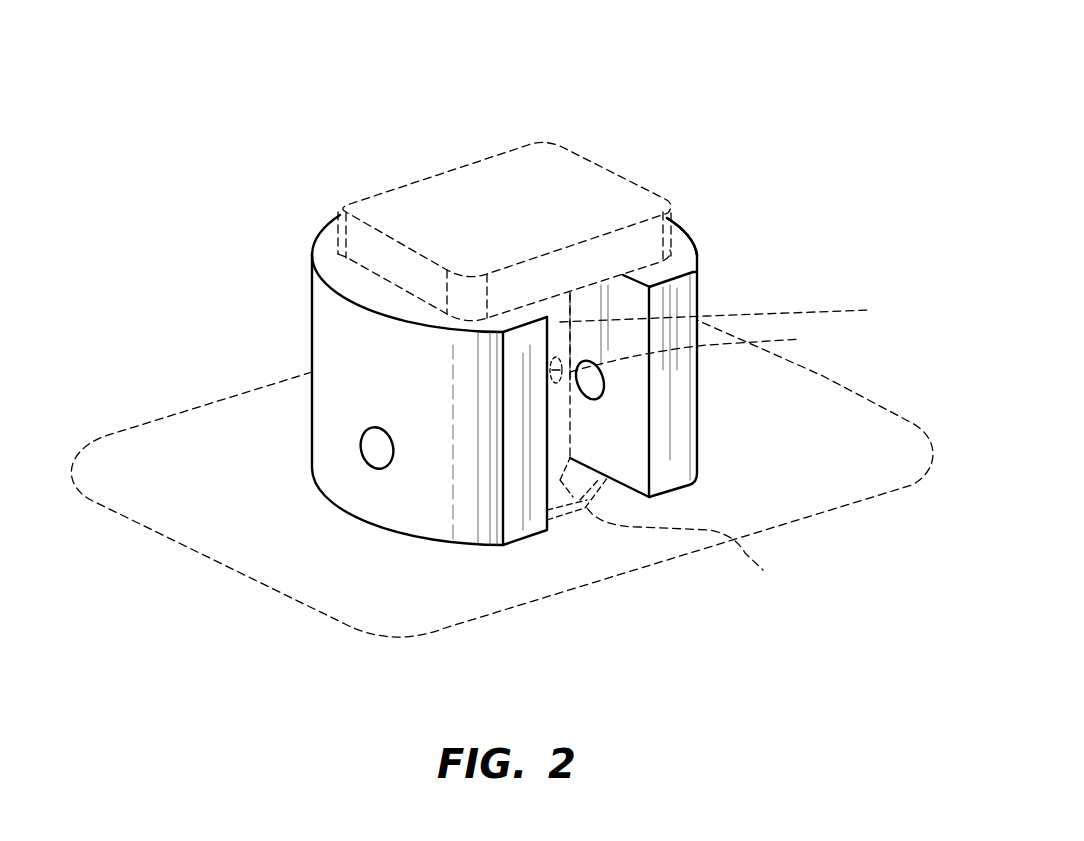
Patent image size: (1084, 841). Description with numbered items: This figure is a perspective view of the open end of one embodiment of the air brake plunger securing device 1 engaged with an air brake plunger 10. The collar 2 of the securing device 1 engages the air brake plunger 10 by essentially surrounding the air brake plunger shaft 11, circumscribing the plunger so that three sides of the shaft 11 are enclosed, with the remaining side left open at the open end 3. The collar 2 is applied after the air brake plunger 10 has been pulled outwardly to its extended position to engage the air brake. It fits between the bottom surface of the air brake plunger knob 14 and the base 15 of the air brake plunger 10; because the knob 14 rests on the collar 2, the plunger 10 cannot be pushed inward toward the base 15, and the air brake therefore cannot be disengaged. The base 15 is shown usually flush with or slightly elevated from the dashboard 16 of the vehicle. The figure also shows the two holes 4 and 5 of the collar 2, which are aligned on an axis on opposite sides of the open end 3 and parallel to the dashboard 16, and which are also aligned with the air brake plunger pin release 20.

The air brake plunger securing device 1 is at (697, 165).
The collar 2 is at (677, 247).
The open end 3 is at (586, 296).
The hole 4 is at (385, 447).
The hole 5 is at (592, 383).
The air brake plunger 10 is at (529, 307).
The air brake plunger shaft 11 is at (735, 310).
The air brake plunger knob 14 is at (490, 165).
The base 15 is at (688, 555).
The dashboard 16 is at (213, 560).
The air brake plunger pin release 20 is at (705, 348).